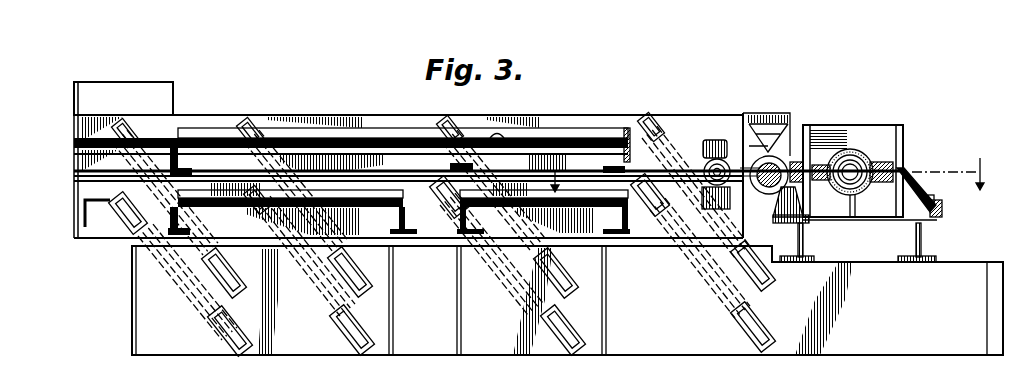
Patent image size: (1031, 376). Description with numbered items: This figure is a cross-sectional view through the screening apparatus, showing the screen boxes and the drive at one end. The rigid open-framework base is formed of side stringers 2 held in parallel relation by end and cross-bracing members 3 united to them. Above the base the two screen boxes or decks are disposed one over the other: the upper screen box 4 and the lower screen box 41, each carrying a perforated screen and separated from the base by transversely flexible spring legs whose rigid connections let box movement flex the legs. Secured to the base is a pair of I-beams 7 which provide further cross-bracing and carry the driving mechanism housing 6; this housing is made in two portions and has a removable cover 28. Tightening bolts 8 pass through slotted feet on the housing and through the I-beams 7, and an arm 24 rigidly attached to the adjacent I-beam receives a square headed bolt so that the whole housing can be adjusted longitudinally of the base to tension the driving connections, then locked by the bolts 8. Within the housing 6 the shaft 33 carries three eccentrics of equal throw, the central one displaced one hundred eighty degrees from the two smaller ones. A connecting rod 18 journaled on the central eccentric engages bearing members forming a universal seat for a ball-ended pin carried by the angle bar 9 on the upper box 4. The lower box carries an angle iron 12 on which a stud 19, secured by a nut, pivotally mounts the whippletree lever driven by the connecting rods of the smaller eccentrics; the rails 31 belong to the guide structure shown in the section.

The side stringers 2 is at (307, 356).
The end and cross-bracing members 3 is at (132, 320).
The guide rails 31 is at (206, 213).
The upper screen box 4 is at (300, 104).
The lower housing 41 is at (97, 239).
The driving mechanism housing 6 is at (715, 118).
The I-beams 7 is at (755, 98).
The tightening bolts 8 is at (774, 173).
The angle bar 9 is at (777, 123).
The angle iron 12 is at (687, 247).
The connecting rod 18 is at (792, 153).
The stud 19 is at (734, 143).
The arm 24 is at (941, 206).
The removable cover 28 is at (880, 124).
The shaft 33 is at (868, 203).